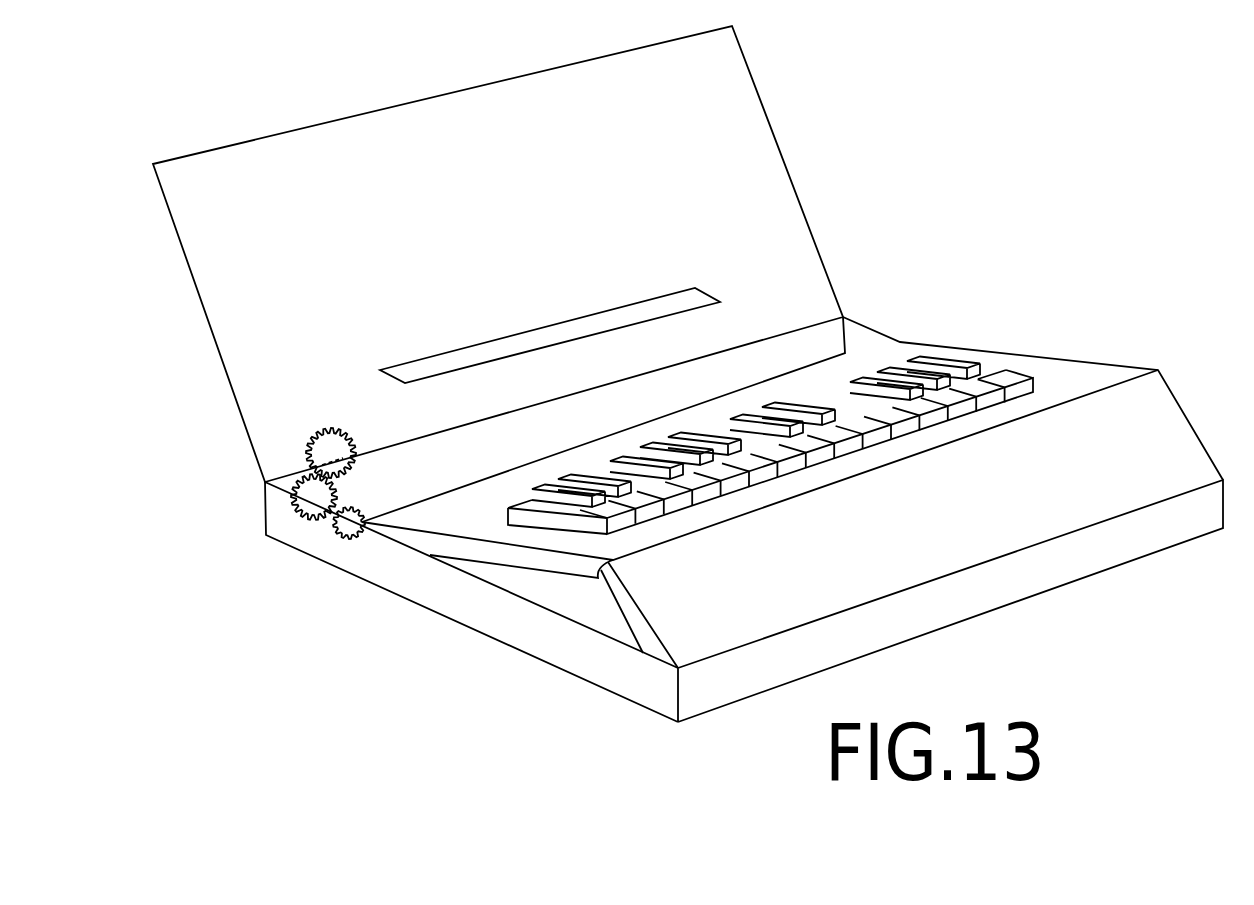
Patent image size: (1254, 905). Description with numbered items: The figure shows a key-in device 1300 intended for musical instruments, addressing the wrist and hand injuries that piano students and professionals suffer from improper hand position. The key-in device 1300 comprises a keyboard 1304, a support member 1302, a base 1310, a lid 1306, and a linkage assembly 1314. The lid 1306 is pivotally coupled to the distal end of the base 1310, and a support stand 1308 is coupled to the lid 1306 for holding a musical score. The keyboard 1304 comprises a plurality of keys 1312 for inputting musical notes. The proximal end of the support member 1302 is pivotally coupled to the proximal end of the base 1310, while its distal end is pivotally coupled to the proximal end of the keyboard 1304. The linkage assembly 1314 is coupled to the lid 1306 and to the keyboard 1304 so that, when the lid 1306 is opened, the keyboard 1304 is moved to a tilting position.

The key-in device 1300 is at (590, 785).
The support member 1302 is at (1043, 510).
The keyboard 1304 is at (1062, 387).
The lid 1306 is at (545, 222).
The support stand 1308 is at (777, 255).
The base 1310 is at (433, 593).
The keys 1312 is at (998, 378).
The linkage assembly 1314 is at (320, 502).